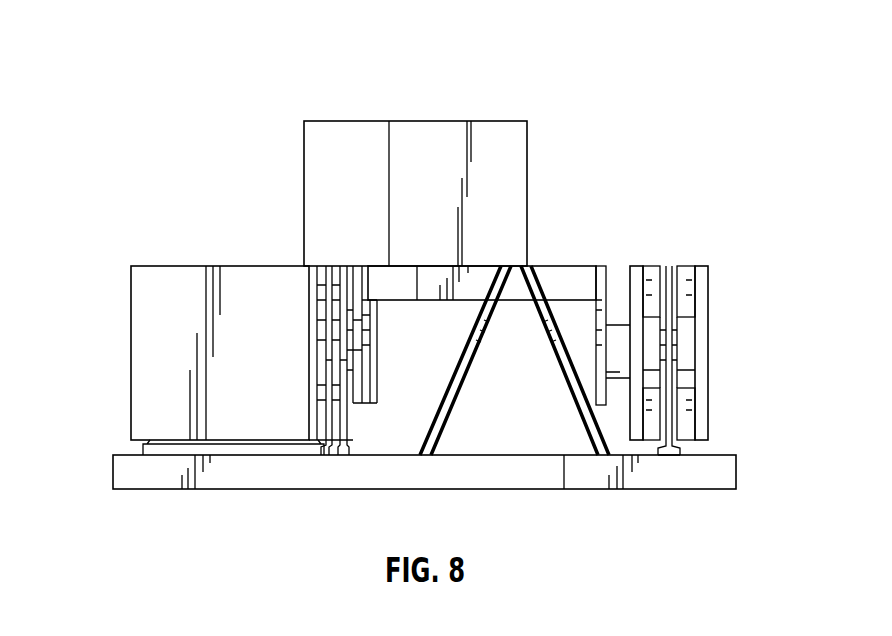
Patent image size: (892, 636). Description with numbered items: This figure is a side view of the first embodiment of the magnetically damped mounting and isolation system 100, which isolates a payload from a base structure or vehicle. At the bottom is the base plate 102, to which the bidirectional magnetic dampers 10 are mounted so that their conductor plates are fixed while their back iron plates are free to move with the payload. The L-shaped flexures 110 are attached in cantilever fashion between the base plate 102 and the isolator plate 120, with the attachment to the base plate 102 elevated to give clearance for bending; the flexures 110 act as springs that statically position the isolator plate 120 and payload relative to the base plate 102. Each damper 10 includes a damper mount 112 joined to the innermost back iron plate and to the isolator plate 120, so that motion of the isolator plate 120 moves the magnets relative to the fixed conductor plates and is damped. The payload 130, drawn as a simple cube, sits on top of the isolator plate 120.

The magnetically damped mounting and isolation system 100 is at (108, 49).
The bidirectional magnetic damper 10 is at (130, 358).
The base plate 102 is at (717, 483).
The L-shaped flexure 110 is at (486, 333).
The damper mount 112 is at (604, 266).
The isolator plate 120 is at (547, 275).
The payload 130 is at (440, 138).